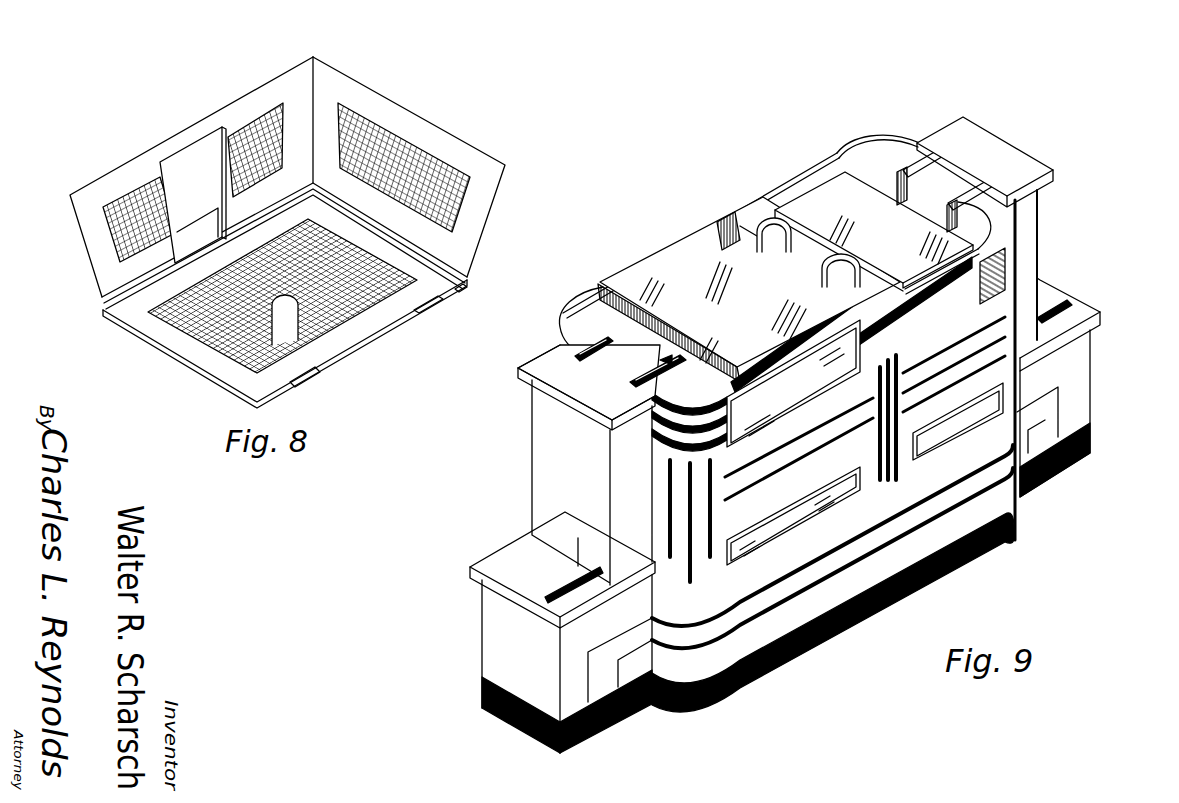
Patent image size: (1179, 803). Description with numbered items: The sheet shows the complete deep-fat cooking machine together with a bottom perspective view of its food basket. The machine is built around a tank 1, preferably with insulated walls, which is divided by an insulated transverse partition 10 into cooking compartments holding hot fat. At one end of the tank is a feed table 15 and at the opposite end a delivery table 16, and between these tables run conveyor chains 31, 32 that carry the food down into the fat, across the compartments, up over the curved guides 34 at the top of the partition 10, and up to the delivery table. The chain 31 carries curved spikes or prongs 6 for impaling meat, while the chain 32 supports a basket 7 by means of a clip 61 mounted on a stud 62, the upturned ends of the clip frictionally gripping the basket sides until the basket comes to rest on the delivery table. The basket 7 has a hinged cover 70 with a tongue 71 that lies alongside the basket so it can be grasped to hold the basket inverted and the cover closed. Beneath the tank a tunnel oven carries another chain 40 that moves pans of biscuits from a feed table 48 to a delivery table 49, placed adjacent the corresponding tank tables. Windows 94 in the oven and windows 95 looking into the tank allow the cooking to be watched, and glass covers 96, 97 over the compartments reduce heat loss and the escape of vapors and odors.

In FIG. 9, the tank 1 is at (745, 202).
In FIG. 9, the curved spikes or prongs 6 is at (662, 360).
In FIG. 8, the basket 7 is at (337, 88).
In FIG. 9, the transverse partition 10 is at (738, 242).
In FIG. 9, the feed table 15 is at (589, 465).
In FIG. 9, the delivery table 16 is at (985, 162).
In FIG. 9, the chain 31 is at (658, 380).
In FIG. 9, the chain 32 is at (573, 353).
In FIG. 9, the curved guides 34 is at (783, 237).
In FIG. 9, the chain 40 is at (577, 553).
In FIG. 9, the feed table 48 is at (562, 632).
In FIG. 9, the delivery table 49 is at (1052, 295).
In FIG. 8, the clip 61 is at (355, 348).
In FIG. 9, the clip 61 is at (905, 170).
In FIG. 8, the stud 62 is at (285, 318).
In FIG. 8, the hinged cover 70 is at (400, 257).
In FIG. 8, the tongue 71 is at (193, 195).
In FIG. 9, the windows 94 is at (770, 528).
In FIG. 9, the windows 95 is at (793, 383).
In FIG. 9, the glass cover 96 is at (749, 289).
In FIG. 9, the glass cover 97 is at (874, 231).